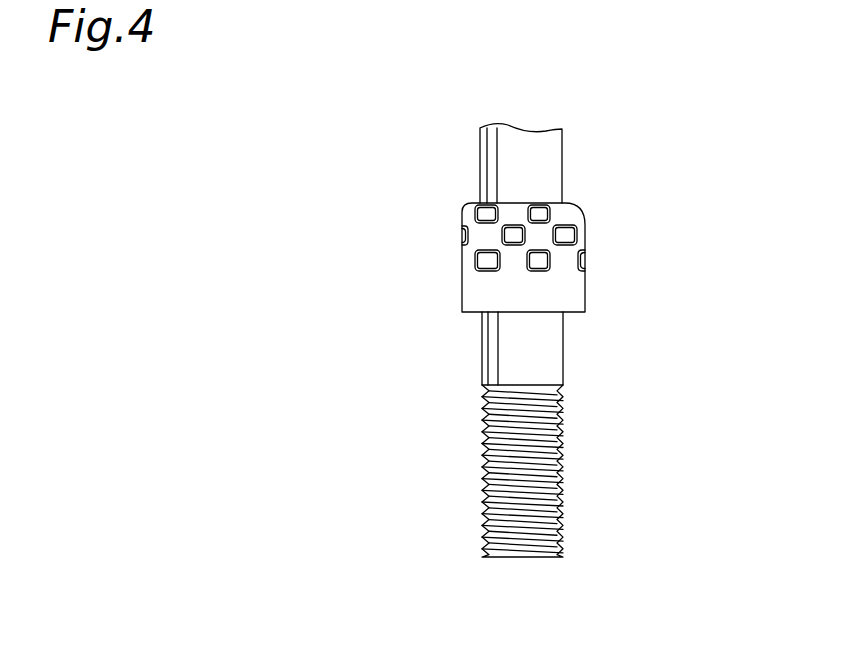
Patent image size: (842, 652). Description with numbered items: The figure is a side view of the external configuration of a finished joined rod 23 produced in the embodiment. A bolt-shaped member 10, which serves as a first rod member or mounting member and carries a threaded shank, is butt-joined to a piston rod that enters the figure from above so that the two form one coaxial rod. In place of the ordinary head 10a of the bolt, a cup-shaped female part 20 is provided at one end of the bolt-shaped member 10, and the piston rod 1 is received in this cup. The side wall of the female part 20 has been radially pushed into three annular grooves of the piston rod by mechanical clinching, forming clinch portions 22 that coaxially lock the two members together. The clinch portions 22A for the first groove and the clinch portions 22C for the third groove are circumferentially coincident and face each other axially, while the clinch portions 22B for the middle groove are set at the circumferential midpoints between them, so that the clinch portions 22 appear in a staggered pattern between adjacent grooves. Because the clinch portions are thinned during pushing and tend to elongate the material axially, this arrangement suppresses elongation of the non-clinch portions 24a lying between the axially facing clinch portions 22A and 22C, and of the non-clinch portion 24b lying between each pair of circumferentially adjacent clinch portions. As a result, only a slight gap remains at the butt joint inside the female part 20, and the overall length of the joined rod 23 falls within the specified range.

The tube 1 is at (562, 158).
The bolt-shaped member 10 is at (533, 434).
The head 10a is at (563, 440).
The female part 20 is at (573, 297).
The clinch portions 22 is at (441, 239).
The clinch portions 22A is at (487, 262).
The clinch portions 22B is at (510, 233).
The clinch portions 22C is at (478, 214).
The joined rod 23 is at (639, 191).
The non-clinch portions 24a is at (535, 240).
The non-clinch portion 24b is at (512, 210).